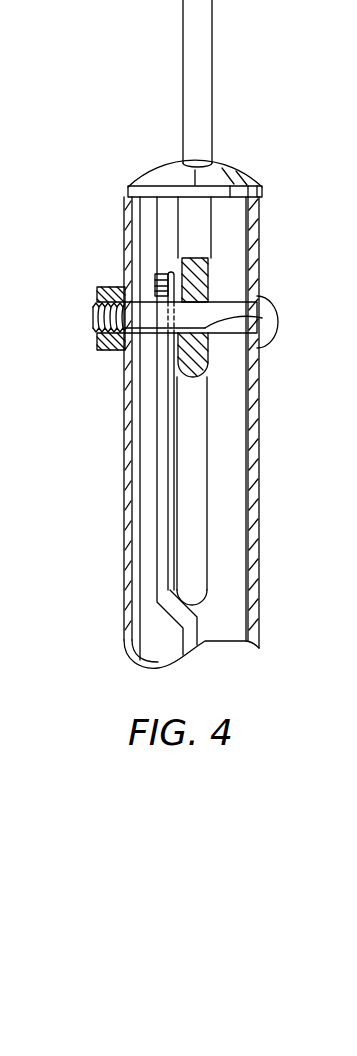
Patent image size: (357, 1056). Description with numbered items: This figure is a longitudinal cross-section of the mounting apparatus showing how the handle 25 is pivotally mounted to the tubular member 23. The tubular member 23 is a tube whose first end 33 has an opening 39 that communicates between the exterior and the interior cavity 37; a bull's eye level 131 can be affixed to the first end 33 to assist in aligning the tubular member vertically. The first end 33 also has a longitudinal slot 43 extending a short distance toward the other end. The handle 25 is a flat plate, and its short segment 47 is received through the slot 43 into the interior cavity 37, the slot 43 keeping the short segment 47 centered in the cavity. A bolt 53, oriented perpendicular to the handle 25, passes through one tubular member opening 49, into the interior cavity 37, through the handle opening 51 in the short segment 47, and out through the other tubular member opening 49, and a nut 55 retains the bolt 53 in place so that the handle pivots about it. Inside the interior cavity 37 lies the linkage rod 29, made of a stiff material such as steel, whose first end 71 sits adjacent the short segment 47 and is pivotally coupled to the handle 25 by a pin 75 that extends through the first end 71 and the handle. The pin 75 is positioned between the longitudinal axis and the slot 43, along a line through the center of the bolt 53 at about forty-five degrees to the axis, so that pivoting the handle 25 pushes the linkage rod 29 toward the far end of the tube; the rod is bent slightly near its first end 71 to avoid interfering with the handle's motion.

The handle 25 is at (207, 48).
The bull's eye level 131 is at (152, 166).
The first end 33 is at (127, 205).
The opening 39 is at (249, 178).
The tubular member 23 is at (127, 472).
The bolt 53 is at (127, 380).
The interior cavity 37 is at (246, 527).
The linkage rod 29 is at (160, 560).
The first end 71 is at (164, 271).
The pin 75 is at (155, 288).
The handle opening 51 is at (262, 332).
The tubular member opening 49 is at (272, 306).
The nut 55 is at (97, 348).
The short segment 47 is at (215, 365).
The longitudinal slot 43 is at (203, 565).